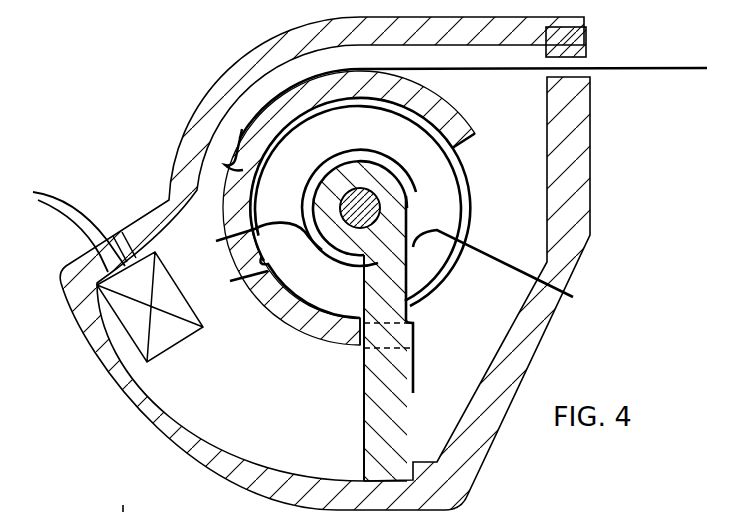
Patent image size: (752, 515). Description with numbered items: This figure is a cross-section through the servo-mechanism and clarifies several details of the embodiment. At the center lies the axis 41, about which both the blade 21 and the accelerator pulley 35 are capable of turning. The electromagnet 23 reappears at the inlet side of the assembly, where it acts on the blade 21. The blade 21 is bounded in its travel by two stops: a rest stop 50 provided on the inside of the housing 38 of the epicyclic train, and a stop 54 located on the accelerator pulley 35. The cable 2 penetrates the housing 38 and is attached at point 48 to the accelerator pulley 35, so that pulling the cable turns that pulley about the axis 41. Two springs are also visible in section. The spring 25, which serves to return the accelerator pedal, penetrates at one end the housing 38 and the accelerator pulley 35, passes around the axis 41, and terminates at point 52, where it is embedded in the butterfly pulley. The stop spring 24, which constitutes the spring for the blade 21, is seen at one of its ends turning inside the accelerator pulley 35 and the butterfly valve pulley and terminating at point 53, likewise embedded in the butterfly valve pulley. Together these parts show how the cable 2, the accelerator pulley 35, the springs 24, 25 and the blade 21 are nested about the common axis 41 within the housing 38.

The cable 2 is at (627, 68).
The blade 21 is at (373, 407).
The electromagnet 23 is at (178, 348).
The stop spring 24 is at (281, 270).
The spring 25 is at (282, 222).
The accelerator pulley 35 is at (457, 123).
The housing 38 is at (590, 160).
The axis 41 is at (366, 190).
The attachment point of cable 48 is at (227, 167).
The rest stop 50 is at (422, 467).
The termination of return spring 52 is at (220, 246).
The termination of stop spring 53 is at (242, 287).
The stop 54 is at (355, 343).